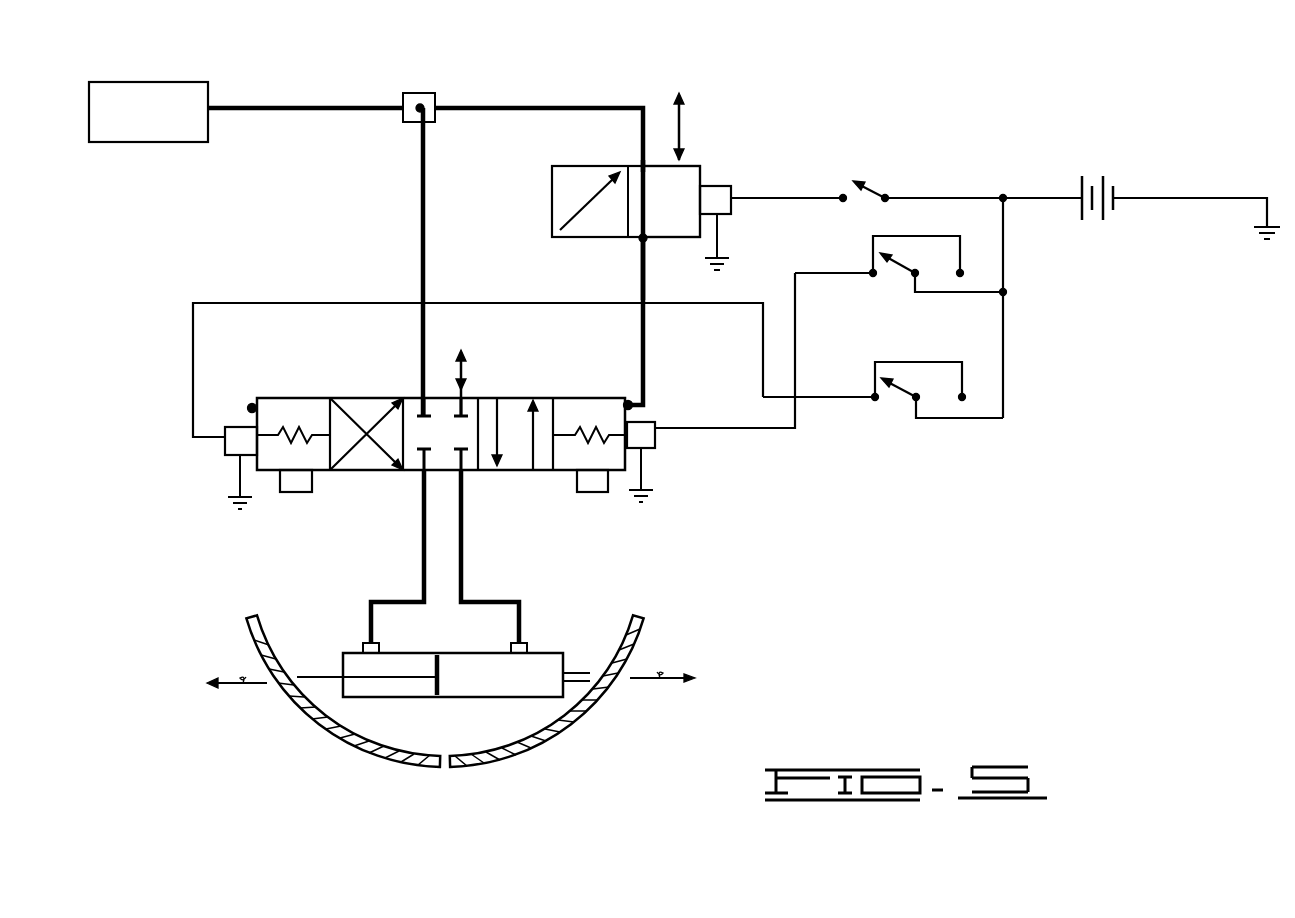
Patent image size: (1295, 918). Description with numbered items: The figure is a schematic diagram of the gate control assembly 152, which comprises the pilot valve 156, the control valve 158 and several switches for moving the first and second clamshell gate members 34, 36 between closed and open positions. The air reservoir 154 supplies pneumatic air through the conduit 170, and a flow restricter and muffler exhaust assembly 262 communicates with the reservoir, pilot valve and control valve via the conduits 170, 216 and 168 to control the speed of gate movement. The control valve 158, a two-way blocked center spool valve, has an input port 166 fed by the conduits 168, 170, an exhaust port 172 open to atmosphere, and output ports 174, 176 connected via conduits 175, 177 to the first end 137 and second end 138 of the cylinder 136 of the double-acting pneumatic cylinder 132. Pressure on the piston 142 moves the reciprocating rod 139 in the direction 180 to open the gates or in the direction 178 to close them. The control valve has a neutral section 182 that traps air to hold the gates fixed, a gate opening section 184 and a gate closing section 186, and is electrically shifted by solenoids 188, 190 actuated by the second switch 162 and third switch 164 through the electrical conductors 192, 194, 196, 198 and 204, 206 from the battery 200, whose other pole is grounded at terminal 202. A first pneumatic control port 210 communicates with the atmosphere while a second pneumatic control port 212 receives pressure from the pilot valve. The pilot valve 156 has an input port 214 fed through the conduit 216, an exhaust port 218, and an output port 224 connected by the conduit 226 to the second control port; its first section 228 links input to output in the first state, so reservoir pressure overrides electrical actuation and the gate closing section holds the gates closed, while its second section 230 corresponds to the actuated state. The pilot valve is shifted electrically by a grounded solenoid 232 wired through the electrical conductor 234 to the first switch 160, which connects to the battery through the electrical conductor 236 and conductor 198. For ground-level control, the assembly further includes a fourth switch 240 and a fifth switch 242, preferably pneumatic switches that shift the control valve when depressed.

The air reservoir 154 is at (195, 82).
The conduit 170 is at (315, 105).
The flow restricter and muffler exhaust assembly 262 is at (440, 88).
The conduit 168 is at (425, 245).
The conduit 216 is at (525, 107).
The input port 214 is at (640, 163).
The pilot valve 156 is at (715, 158).
The second section 230 is at (565, 192).
The first section 228 is at (700, 175).
The exhaust port 218 is at (690, 158).
The solenoid 232 is at (733, 205).
The output port 224 is at (638, 244).
The conduit 226 is at (640, 276).
The electrical conductor 234 is at (812, 195).
The first switch 160 is at (882, 178).
The electrical conductor 236 is at (935, 197).
The electrical conductor 198 is at (1040, 197).
The battery 200 is at (1122, 158).
The terminal 202 is at (1210, 197).
The electrical conductor 196 is at (1005, 235).
The second switch 162 is at (858, 260).
The electrical conductor 194 is at (965, 292).
The third switch 164 is at (875, 383).
The electrical conductor 206 is at (990, 418).
The electrical conductor 204 is at (350, 302).
The electrical conductor 192 is at (797, 422).
The gate control assembly 152 is at (190, 274).
The control valve 158 is at (352, 487).
The gate opening section 184 is at (362, 398).
The input port 166 is at (420, 398).
The neutral section 182 is at (443, 398).
The exhaust port 172 is at (468, 385).
The gate closing section 186 is at (545, 398).
The first pneumatic control port 210 is at (252, 403).
The second pneumatic control port 212 is at (633, 408).
The solenoid 190 is at (225, 440).
The fourth switch 240 is at (292, 493).
The solenoid 188 is at (657, 440).
The fifth switch 242 is at (597, 493).
The output port 174 is at (422, 472).
The output port 176 is at (463, 472).
The conduit 175 is at (421, 545).
The conduit 177 is at (465, 542).
The first end 137 is at (352, 656).
The second end 138 is at (540, 656).
The double-acting pneumatic cylinder 132 is at (513, 702).
The cylinder 136 is at (398, 690).
The piston 142 is at (440, 665).
The reciprocating rod 139 is at (312, 675).
The first clamshell gate member 34 is at (242, 628).
The second clamshell gate member 36 is at (651, 630).
The direction 180 is at (240, 688).
The direction 178 is at (653, 684).